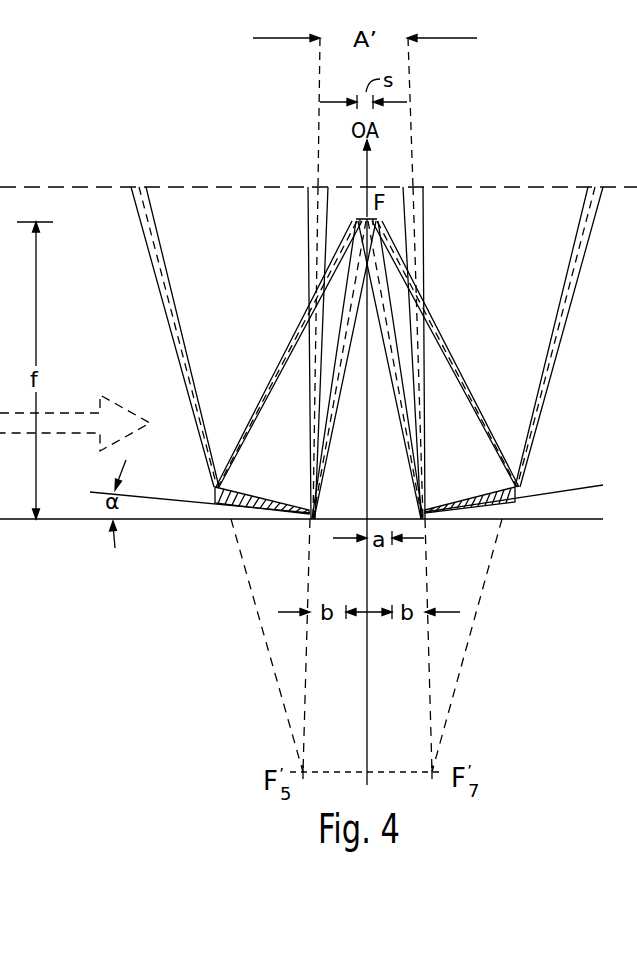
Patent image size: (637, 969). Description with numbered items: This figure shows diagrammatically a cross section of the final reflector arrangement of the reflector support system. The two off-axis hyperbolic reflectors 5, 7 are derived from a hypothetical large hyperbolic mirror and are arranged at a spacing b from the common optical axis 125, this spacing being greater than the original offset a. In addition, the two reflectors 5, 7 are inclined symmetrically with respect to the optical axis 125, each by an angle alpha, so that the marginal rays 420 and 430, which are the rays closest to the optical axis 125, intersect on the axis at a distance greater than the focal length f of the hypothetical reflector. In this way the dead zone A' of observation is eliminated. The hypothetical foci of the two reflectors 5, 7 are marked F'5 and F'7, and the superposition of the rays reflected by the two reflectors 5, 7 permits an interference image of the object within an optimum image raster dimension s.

The marginal ray 420 is at (312, 337).
The marginal ray 430 is at (409, 337).
The reflector 5 is at (232, 520).
The reflector 7 is at (490, 505).
The optical axis 125 is at (368, 715).